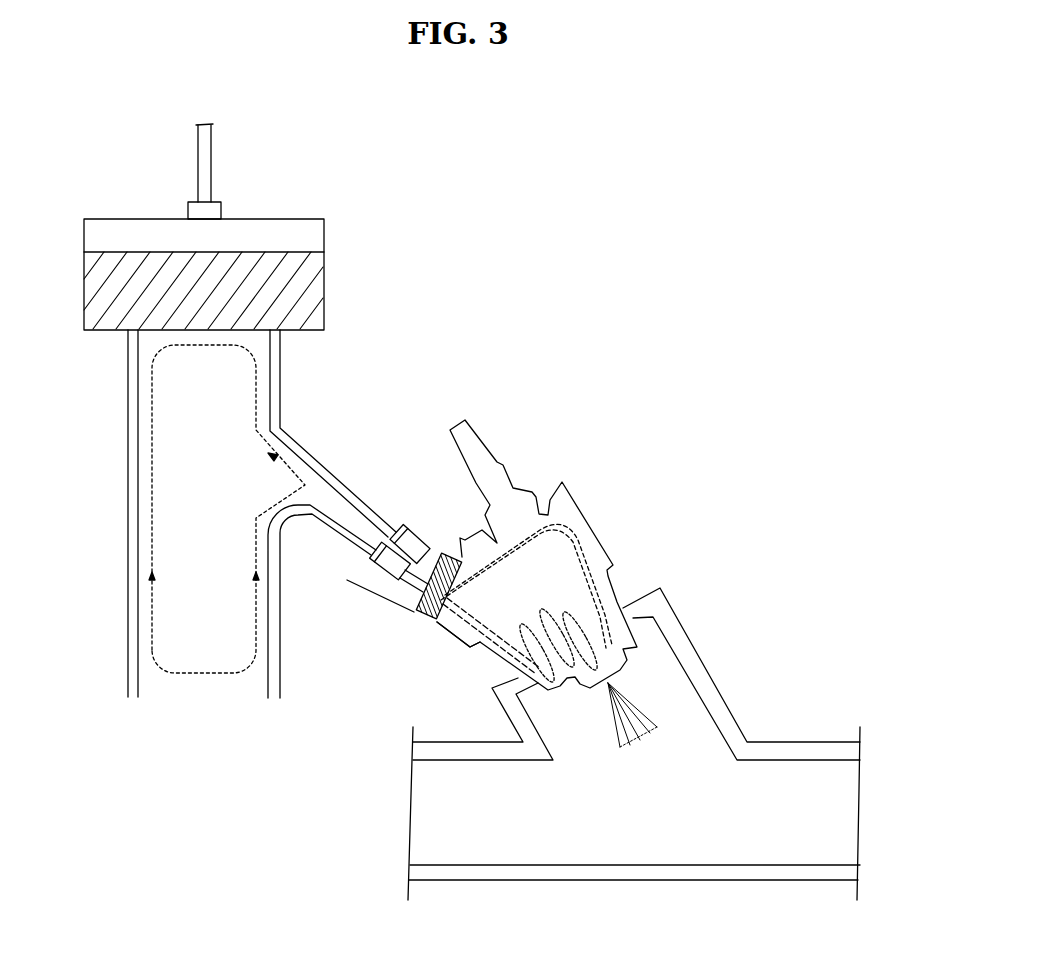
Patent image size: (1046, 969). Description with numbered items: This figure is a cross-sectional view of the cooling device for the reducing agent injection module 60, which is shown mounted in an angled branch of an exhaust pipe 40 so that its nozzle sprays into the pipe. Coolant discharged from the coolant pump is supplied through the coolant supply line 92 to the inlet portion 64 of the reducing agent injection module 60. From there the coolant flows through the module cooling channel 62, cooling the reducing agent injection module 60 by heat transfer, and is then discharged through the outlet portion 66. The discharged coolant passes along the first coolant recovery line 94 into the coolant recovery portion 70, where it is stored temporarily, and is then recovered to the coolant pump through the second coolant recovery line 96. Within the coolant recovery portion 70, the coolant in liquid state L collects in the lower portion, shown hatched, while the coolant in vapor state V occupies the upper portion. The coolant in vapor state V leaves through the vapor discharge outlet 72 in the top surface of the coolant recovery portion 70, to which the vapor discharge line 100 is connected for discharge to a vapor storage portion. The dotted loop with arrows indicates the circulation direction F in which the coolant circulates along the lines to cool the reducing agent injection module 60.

The intake pipe 40 is at (640, 880).
The reducing agent injection module 60 is at (603, 523).
The module cooling channel 62 is at (480, 652).
The inlet portion 64 is at (378, 588).
The outlet portion 66 is at (408, 534).
The coolant recovery portion 70 is at (325, 237).
The vapor discharge outlet 72 is at (215, 210).
The coolant supply line 92 is at (282, 673).
The first coolant recovery line 94 is at (281, 381).
The second coolant recovery line 96 is at (128, 672).
The vapor discharge line 100 is at (199, 154).
The coolant in vapor state V is at (93, 236).
The coolant in liquid state L is at (96, 290).
The circulation direction F is at (227, 509).